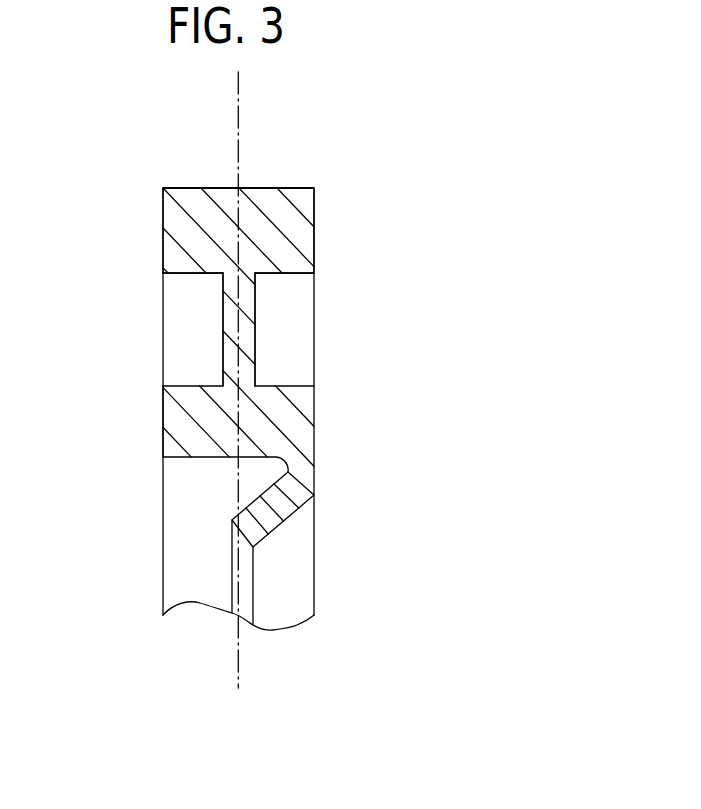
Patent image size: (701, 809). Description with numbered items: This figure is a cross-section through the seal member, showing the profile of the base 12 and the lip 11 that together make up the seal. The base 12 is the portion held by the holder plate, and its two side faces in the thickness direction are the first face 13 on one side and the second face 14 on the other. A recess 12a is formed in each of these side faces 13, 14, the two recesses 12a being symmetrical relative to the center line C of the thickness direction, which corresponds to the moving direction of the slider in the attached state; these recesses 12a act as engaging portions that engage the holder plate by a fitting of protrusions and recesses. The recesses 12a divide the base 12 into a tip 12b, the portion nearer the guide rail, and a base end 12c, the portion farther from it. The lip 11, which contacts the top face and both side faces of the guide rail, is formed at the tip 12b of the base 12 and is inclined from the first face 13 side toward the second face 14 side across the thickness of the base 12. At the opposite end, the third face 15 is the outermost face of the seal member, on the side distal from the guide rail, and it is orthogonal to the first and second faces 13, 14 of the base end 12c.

The lip 11 is at (268, 518).
The base 12 is at (318, 210).
The recesses (engaging portions) 12a is at (222, 348).
The tip 12b is at (211, 449).
The base end 12c is at (268, 199).
The first face 13 is at (314, 303).
The second face 14 is at (163, 305).
The third face 15 is at (208, 187).
The center line C is at (238, 92).